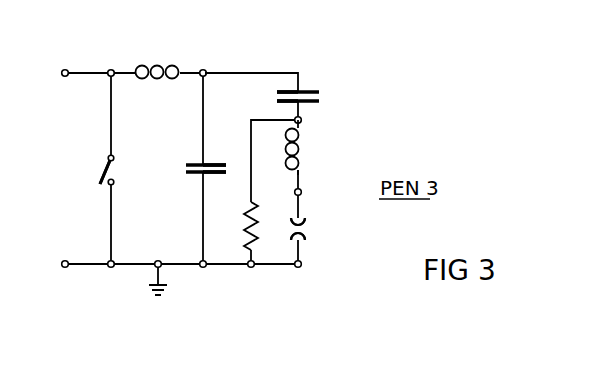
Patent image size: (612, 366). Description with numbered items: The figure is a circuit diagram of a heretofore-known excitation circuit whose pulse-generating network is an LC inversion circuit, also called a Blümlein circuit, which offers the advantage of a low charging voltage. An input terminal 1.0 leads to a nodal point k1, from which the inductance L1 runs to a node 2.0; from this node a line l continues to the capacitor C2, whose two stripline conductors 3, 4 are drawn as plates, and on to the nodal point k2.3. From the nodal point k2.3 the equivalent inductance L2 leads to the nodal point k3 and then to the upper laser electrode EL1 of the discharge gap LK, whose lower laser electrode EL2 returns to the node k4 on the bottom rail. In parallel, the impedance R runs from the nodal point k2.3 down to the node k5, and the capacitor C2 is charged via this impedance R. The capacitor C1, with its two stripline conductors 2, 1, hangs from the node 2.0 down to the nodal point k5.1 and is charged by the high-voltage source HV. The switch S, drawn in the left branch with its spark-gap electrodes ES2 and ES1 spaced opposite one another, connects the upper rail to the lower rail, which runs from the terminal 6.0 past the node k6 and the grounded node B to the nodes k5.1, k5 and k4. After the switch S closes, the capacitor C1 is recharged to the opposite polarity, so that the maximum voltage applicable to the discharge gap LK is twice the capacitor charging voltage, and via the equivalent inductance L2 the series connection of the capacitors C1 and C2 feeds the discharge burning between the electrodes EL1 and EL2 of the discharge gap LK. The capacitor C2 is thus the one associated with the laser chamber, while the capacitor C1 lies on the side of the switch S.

The input terminal 1.0 is at (68, 65).
The nodal point k1 is at (111, 70).
The inductance L1 is at (157, 58).
The node 2.0 is at (203, 70).
The line l is at (243, 73).
The capacitor conductor 3 is at (277, 92).
The capacitor conductor 4 is at (279, 101).
The capacitor C2 is at (310, 92).
The nodal point k2.3 is at (302, 120).
The equivalent inductance L2 is at (304, 149).
The nodal point k3 is at (302, 192).
The laser electrode EL1 is at (306, 222).
The discharge gap LK is at (309, 233).
The laser electrode EL2 is at (304, 243).
The node k4 is at (298, 268).
The nodal point k5 is at (251, 268).
The impedance R is at (251, 225).
The capacitor C1 is at (194, 164).
The capacitor conductor 2 is at (210, 164).
The capacitor conductor 1 is at (208, 173).
The switch S is at (109, 158).
The high-voltage source HV is at (82, 171).
The switch electrode ES2 is at (114, 158).
The switch electrode ES1 is at (114, 183).
The terminal 6.0 is at (67, 281).
The node k6 is at (111, 269).
The ground node B is at (157, 260).
The nodal point k5.1 is at (203, 269).